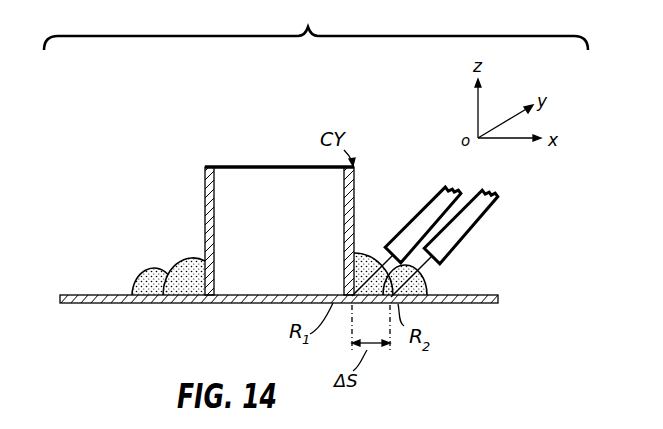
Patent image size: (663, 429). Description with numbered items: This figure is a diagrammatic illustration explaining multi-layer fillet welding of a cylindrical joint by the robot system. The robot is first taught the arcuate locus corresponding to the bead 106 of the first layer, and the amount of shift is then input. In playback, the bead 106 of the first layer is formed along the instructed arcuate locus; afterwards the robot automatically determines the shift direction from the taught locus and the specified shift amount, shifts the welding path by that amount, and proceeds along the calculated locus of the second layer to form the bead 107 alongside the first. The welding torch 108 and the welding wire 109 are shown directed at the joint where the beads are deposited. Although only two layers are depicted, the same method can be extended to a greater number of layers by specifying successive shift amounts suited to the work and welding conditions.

The bead 106 is at (358, 252).
The bead 107 is at (428, 287).
The welding torch 108 is at (431, 201).
The welding wire 109 is at (427, 264).